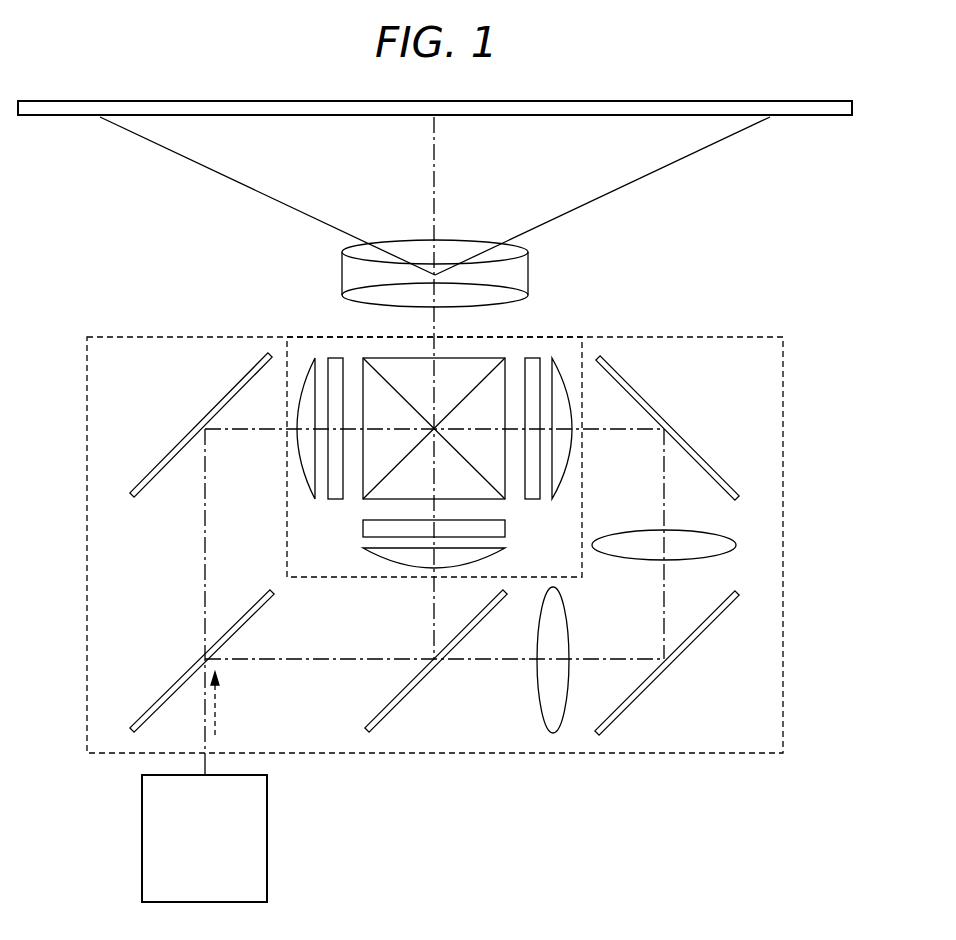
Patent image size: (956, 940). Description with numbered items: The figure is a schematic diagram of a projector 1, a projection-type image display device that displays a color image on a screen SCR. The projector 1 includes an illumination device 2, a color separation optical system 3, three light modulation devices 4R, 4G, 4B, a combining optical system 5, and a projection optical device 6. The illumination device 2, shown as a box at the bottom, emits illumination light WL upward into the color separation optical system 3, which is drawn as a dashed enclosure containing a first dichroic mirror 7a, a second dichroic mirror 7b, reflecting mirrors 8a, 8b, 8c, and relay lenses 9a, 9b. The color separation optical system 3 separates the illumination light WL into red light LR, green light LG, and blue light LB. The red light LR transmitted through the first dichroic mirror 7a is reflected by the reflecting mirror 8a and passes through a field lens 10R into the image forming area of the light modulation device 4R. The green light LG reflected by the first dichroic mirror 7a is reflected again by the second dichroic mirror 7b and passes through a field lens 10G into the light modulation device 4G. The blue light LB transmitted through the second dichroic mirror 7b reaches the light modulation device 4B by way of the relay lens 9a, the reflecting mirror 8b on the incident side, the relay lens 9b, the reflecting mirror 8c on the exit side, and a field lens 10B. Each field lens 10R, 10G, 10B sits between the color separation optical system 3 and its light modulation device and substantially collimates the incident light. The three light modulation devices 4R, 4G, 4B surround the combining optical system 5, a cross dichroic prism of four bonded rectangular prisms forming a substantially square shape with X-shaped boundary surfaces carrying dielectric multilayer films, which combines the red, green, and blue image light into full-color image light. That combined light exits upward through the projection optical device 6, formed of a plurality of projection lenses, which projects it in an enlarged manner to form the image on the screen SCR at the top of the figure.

The projector 1 is at (792, 313).
The illumination device 2 is at (267, 835).
The color separation optical system 3 is at (87, 487).
The screen SCR is at (817, 117).
The light modulation device 4R is at (330, 357).
The light modulation device 4G is at (363, 530).
The light modulation device 4B is at (536, 357).
The field lens 10R is at (313, 357).
The field lens 10G is at (366, 553).
The field lens 10B is at (553, 357).
The combining optical system 5 is at (456, 366).
The projection optical device 6 is at (415, 248).
The first dichroic mirror 7a is at (165, 693).
The second dichroic mirror 7b is at (420, 714).
The reflecting mirror 8a is at (178, 443).
The reflecting mirror 8b is at (691, 646).
The reflecting mirror 8c is at (695, 450).
The relay lens 9a is at (538, 683).
The relay lens 9b is at (725, 530).
The red light LR is at (205, 566).
The green light LG is at (434, 612).
The blue light LB is at (664, 605).
The illumination light WL is at (215, 712).